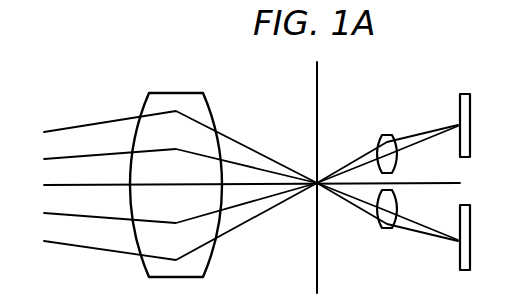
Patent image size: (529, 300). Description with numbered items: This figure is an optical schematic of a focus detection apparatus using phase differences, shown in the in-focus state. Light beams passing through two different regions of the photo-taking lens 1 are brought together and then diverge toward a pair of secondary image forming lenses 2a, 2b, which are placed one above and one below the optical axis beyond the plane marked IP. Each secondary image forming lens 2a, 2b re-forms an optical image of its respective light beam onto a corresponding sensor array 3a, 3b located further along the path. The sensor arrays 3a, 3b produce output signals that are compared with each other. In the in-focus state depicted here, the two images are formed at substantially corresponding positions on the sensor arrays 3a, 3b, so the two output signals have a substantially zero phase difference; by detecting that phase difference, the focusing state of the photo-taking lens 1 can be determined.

The photo-taking lens 1 is at (208, 95).
The image plane IP is at (318, 92).
The secondary image forming lens 2a is at (385, 135).
The secondary image forming lens 2b is at (385, 228).
The sensor array 3a is at (471, 95).
The sensor array 3b is at (471, 262).